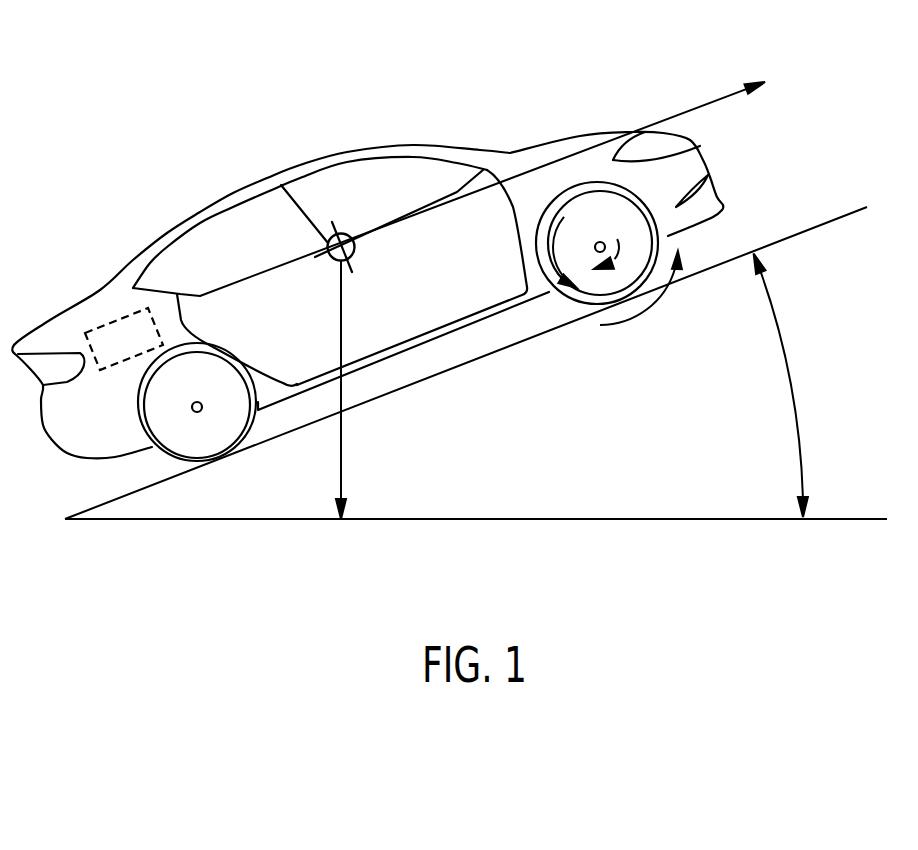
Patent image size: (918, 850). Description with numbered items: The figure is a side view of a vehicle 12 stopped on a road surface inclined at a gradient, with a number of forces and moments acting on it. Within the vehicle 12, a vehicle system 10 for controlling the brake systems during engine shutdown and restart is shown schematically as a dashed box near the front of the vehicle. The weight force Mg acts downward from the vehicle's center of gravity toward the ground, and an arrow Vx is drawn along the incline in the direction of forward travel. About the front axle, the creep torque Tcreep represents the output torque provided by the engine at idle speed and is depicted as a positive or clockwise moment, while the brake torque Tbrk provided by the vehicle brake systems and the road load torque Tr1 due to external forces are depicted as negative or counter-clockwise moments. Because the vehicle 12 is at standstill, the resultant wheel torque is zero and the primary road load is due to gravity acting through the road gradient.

The vehicle system 10 is at (100, 326).
The vehicle 12 is at (244, 88).
The longitudinal velocity Vx is at (504, 180).
The vehicle weight force Mg is at (356, 389).
The creep torque Tcreep is at (590, 249).
The brake torque Tbrk is at (602, 269).
The road load torque Tr1 is at (631, 306).